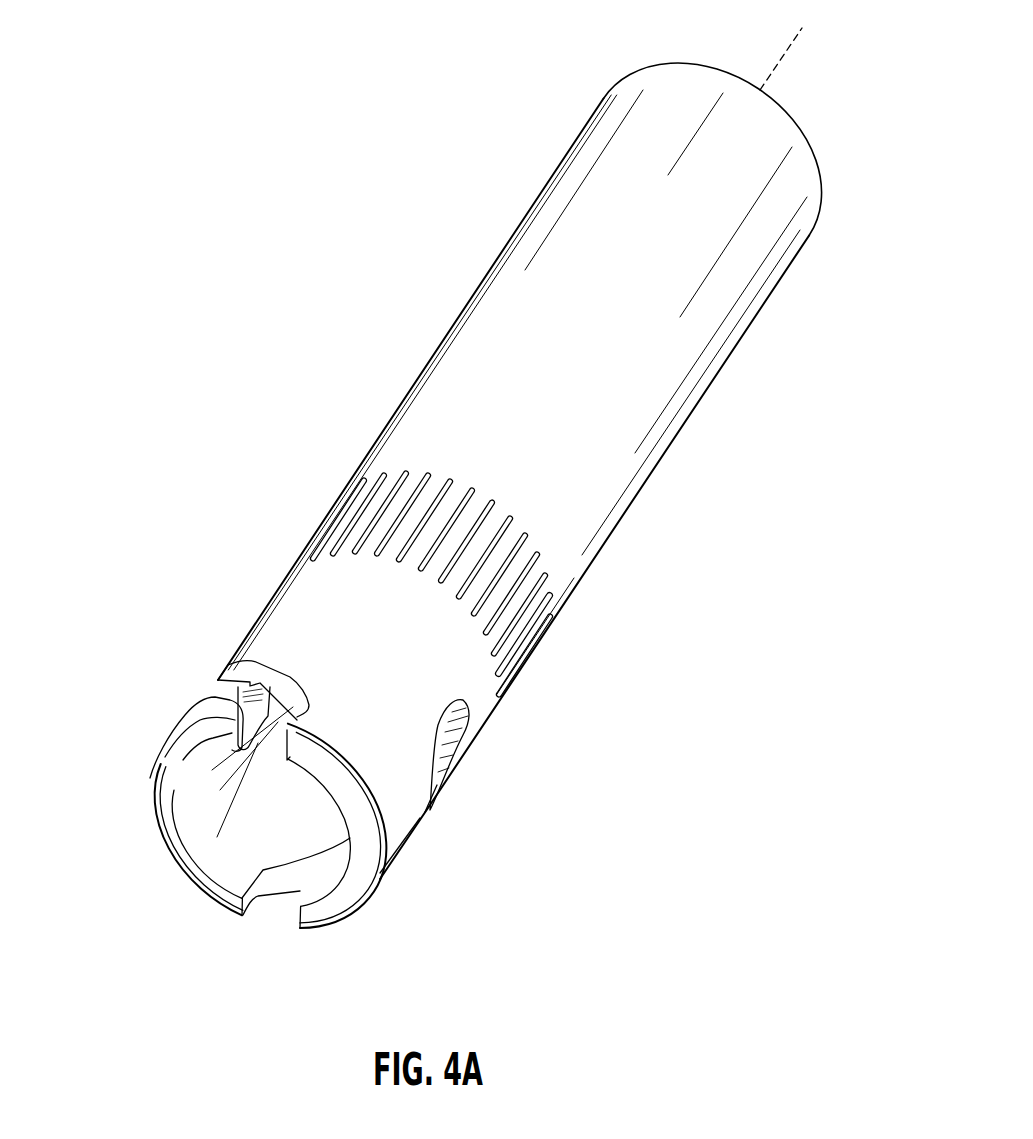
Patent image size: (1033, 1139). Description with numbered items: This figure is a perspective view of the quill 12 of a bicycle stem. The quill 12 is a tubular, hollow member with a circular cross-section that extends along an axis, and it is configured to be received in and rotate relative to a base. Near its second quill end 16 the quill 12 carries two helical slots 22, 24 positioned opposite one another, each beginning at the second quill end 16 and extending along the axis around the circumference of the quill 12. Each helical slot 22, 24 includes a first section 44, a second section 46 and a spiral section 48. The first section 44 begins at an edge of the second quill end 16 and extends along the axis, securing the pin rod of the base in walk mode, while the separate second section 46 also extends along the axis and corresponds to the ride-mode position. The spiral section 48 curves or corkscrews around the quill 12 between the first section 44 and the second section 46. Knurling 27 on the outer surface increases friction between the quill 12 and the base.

The quill 12 is at (251, 388).
The second quill end 16 is at (165, 852).
The helical slot 22 is at (600, 767).
The helical slot 24 is at (193, 617).
The knurling 27 is at (545, 637).
The first section 44 is at (280, 743).
The second section 46 is at (473, 725).
The spiral section 48 is at (219, 680).